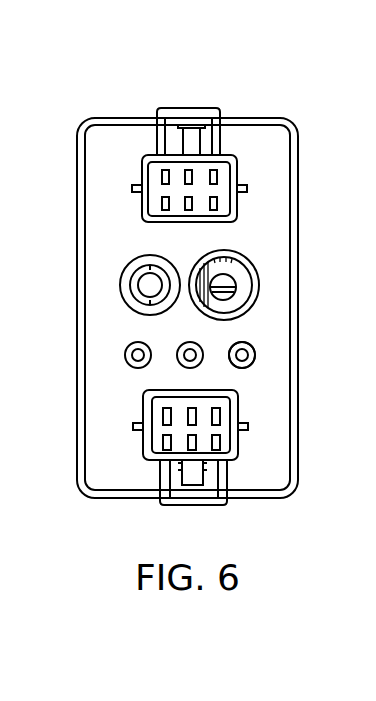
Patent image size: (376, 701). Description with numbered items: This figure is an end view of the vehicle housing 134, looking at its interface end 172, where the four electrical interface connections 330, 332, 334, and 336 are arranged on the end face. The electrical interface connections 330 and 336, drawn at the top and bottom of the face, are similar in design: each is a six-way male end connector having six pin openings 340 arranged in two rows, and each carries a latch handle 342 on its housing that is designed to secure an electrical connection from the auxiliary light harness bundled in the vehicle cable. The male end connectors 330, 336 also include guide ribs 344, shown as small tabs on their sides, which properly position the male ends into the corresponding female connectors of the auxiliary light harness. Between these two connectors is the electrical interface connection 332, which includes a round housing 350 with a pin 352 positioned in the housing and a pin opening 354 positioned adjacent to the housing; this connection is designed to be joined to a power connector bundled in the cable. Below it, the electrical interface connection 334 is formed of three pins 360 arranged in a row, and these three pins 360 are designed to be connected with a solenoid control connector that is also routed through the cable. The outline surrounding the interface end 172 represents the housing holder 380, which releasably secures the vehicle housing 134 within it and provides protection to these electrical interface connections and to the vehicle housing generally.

The vehicle housing 134 is at (78, 195).
The interface end 172 is at (110, 138).
The housing holder 380 is at (267, 116).
The electrical interface connection 330 is at (240, 157).
The electrical interface connection 332 is at (253, 258).
The electrical interface connection 334 is at (255, 345).
The electrical interface connection 336 is at (242, 400).
The pin openings 340 is at (163, 205).
The latch handle 342 is at (202, 113).
The guide ribs 344 is at (135, 190).
The housing 350 is at (257, 272).
The pin 352 is at (228, 288).
The pin opening 354 is at (150, 285).
The pins 360 is at (190, 355).